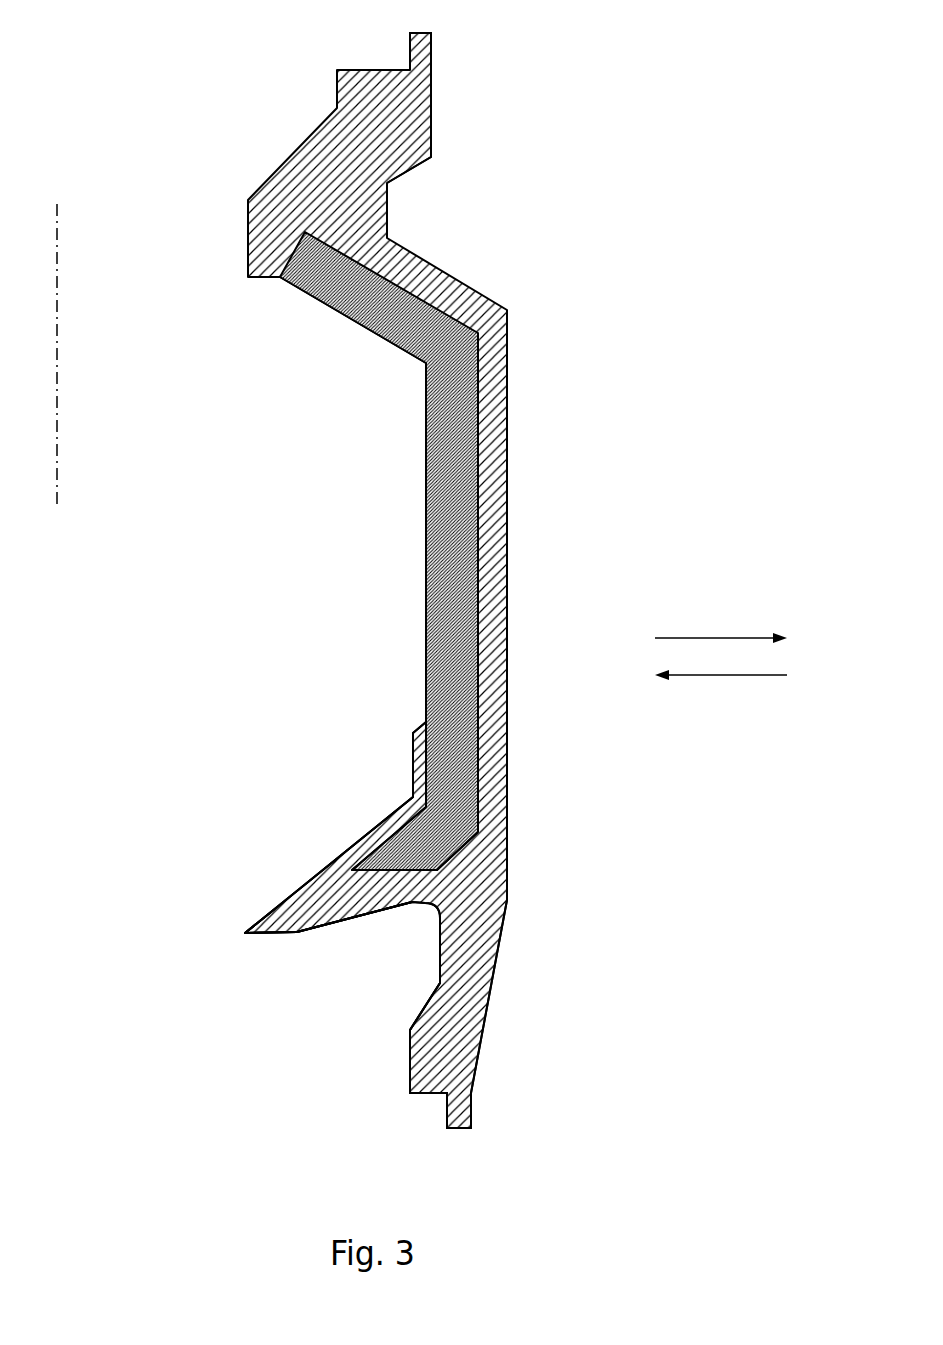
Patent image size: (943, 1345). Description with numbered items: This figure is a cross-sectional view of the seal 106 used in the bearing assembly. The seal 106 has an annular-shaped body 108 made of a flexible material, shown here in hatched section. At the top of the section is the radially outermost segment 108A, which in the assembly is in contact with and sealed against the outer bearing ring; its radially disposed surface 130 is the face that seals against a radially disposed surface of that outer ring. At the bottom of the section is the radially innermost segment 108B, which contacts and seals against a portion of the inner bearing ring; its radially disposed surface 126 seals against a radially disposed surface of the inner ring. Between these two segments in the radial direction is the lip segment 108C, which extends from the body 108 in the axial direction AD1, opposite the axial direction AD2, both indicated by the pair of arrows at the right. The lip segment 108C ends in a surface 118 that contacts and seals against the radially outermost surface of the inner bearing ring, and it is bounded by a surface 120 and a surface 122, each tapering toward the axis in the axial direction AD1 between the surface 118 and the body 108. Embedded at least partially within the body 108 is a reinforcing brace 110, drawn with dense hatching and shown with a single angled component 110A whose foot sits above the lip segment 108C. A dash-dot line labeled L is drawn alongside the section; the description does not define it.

The seal 106 is at (451, 574).
The annular-shaped body 108 is at (508, 487).
The radially outermost segment 108A is at (456, 68).
The radially innermost segment 108B is at (578, 1012).
The lip segment 108C is at (340, 829).
The reinforcing brace 110 is at (425, 588).
The single angled component 110A is at (401, 843).
The surface 118 is at (267, 933).
The surface 120 is at (313, 875).
The surface 122 is at (353, 922).
The radially disposed surface 126 is at (410, 1050).
The radially disposed surface 130 is at (431, 130).
The axial direction AD1 is at (708, 675).
The axial direction AD2 is at (708, 638).
The longitudinal axis L is at (60, 339).